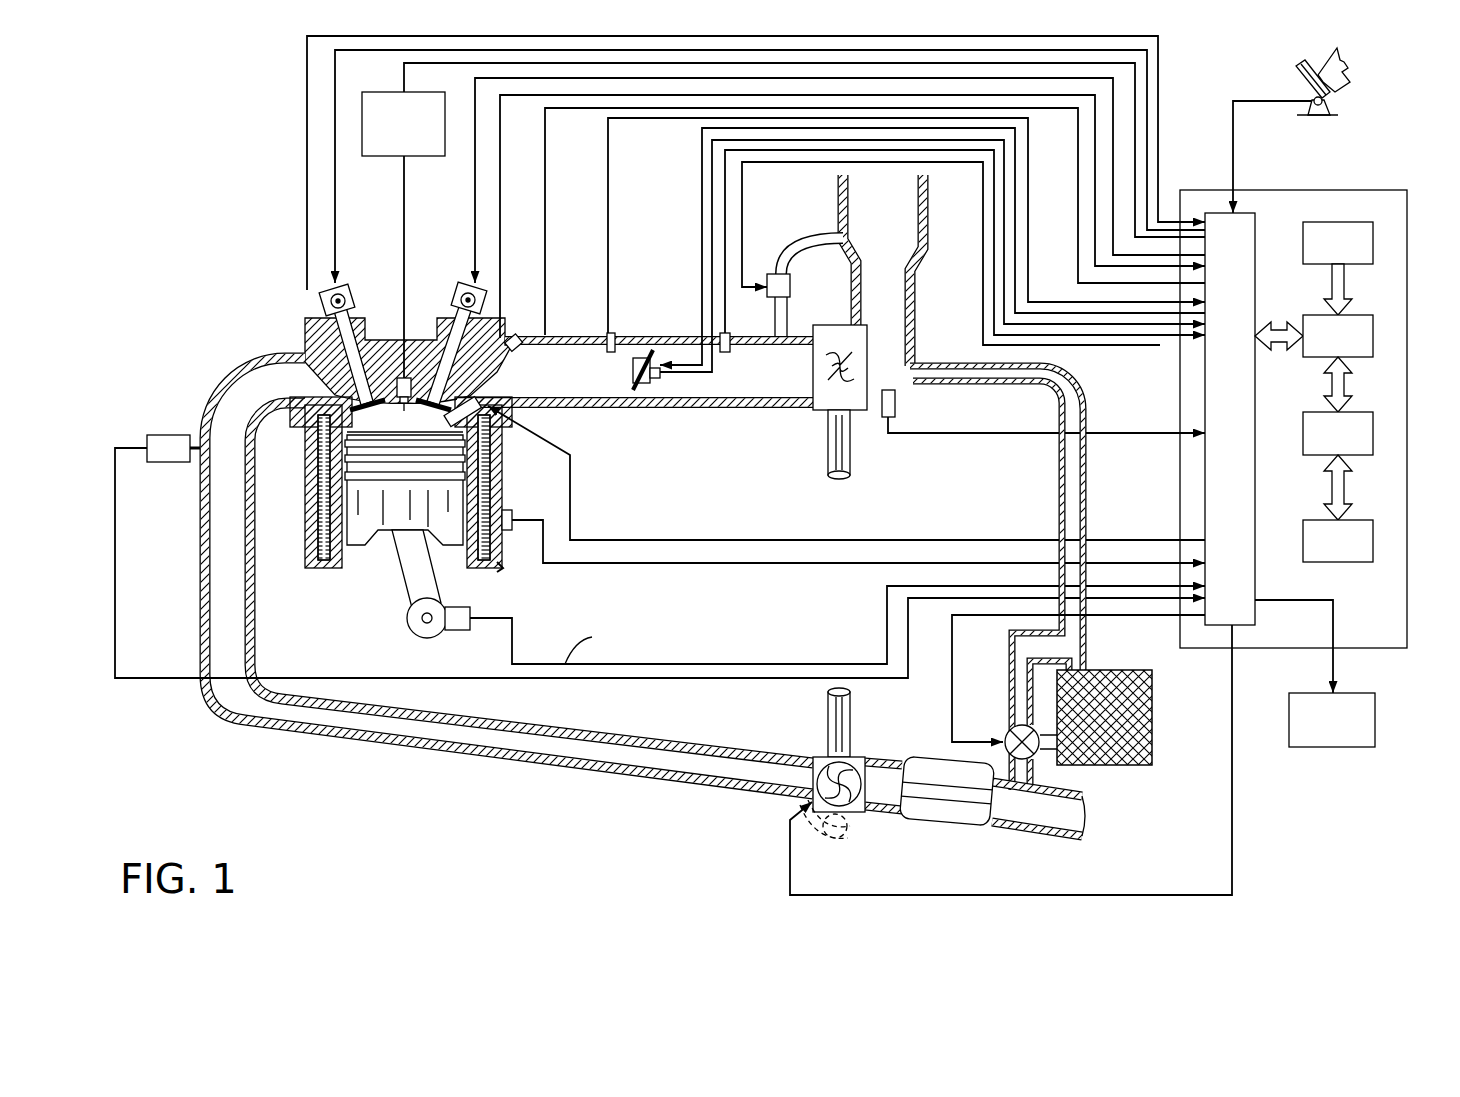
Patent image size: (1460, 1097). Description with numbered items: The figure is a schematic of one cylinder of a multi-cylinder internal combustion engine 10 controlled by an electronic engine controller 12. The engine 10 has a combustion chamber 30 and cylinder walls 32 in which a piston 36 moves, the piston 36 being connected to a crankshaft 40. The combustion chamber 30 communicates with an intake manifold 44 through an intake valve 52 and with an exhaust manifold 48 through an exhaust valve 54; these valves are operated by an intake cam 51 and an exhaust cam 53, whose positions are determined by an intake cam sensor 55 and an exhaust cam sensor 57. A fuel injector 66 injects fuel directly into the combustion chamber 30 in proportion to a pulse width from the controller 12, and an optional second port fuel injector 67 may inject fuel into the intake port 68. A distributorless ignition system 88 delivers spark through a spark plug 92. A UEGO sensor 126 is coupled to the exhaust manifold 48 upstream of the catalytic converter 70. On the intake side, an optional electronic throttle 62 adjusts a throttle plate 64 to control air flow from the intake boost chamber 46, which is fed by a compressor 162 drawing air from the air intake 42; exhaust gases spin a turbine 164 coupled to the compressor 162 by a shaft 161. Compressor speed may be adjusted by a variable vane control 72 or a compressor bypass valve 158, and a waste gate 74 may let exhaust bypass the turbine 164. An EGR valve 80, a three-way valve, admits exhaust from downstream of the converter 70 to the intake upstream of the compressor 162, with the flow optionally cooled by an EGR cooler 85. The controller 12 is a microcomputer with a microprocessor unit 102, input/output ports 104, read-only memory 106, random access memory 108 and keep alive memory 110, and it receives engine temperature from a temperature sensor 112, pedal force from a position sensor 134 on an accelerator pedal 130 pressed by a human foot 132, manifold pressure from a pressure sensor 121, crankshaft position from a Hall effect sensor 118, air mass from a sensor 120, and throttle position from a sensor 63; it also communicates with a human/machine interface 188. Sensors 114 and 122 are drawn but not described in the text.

The internal combustion engine 10 is at (243, 272).
The electronic engine controller 12 is at (1375, 190).
The combustion chamber 30 is at (333, 508).
The cylinder walls 32 is at (350, 569).
The piston 36 is at (390, 517).
The crankshaft 40 is at (414, 637).
The air intake 42 is at (897, 253).
The intake manifold 44 is at (569, 388).
The intake boost chamber 46 is at (752, 386).
The exhaust manifold 48 is at (288, 392).
The intake cam 51 is at (465, 290).
The intake valve 52 is at (453, 343).
The exhaust cam 53 is at (348, 292).
The exhaust valve 54 is at (323, 360).
The intake cam sensor 55 is at (485, 300).
The exhaust cam sensor 57 is at (322, 300).
The electronic throttle 62 is at (630, 340).
The throttle position sensor 63 is at (661, 377).
The throttle plate 64 is at (652, 335).
The fuel injector 66 is at (824, 468).
The port fuel injector 67 is at (516, 334).
The intake port 68 is at (472, 388).
The catalytic converter 70 is at (925, 812).
The variable vane control 72 is at (812, 792).
The waste gate 74 is at (838, 838).
The EGR valve 80 is at (1010, 735).
The EGR cooler 85 is at (1152, 712).
The distributorless ignition system 88 is at (783, 150).
The spark plug 92 is at (400, 372).
The microprocessor unit 102 is at (1375, 330).
The input/output ports 104 is at (1258, 222).
The read-only memory 106 is at (1375, 238).
The random access memory 108 is at (1375, 425).
The keep alive memory 110 is at (1375, 530).
The temperature sensor 112 is at (512, 510).
The knock sensor 114 is at (500, 566).
The Hall effect sensor 118 is at (457, 632).
The air mass sensor 120 is at (896, 408).
The pressure sensor 121 is at (605, 332).
The throttle position sensor 122 is at (738, 325).
The UEGO sensor 126 is at (147, 438).
The accelerator pedal 130 is at (1298, 80).
The human foot 132 is at (1344, 62).
The position sensor 134 is at (1332, 101).
The compressor bypass valve 158 is at (772, 273).
The shaft 161 is at (830, 452).
The compressor 162 is at (812, 410).
The turbine 164 is at (822, 757).
The human/machine interface 188 is at (1315, 673).